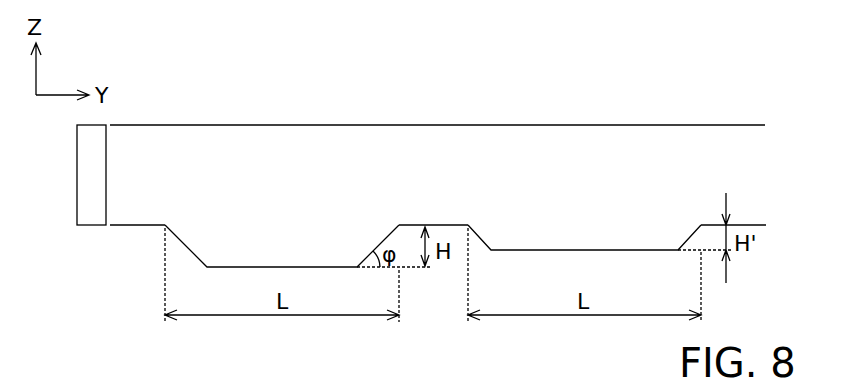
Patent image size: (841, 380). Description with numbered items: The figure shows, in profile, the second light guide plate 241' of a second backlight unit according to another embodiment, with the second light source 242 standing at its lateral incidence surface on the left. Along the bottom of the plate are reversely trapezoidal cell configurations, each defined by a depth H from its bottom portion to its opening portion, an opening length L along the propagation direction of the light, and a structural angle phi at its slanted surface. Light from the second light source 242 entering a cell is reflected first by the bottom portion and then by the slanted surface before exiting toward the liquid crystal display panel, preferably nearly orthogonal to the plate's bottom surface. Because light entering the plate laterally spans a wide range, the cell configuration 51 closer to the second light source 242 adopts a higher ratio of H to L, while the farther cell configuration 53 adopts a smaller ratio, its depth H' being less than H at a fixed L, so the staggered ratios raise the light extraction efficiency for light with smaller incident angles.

The second light guide plate 241' is at (437, 108).
The second light source 242 is at (91, 226).
The cell configuration 51 is at (298, 260).
The cell configuration 53 is at (600, 241).